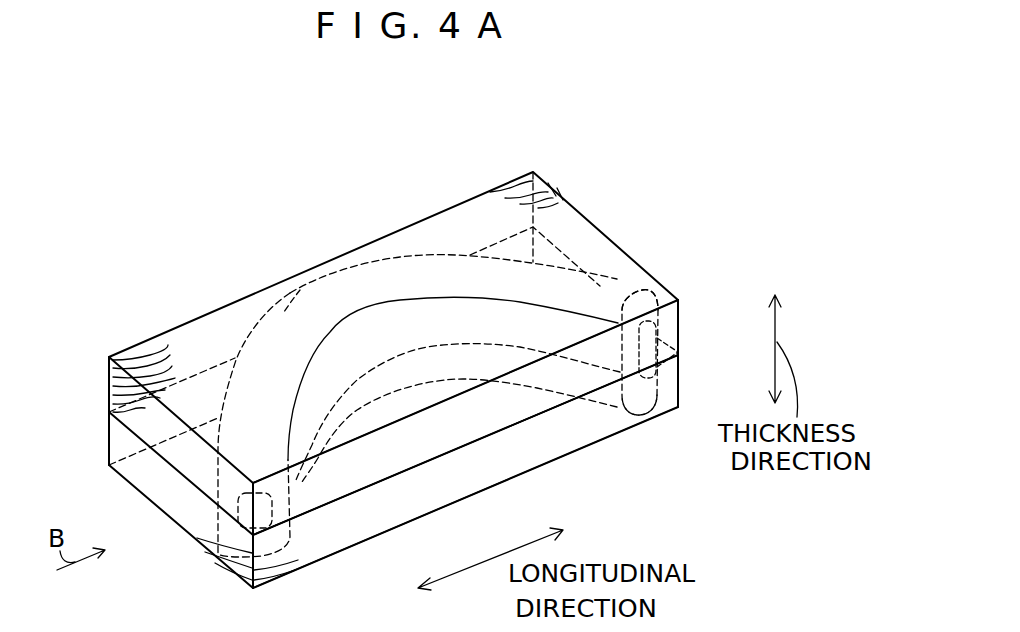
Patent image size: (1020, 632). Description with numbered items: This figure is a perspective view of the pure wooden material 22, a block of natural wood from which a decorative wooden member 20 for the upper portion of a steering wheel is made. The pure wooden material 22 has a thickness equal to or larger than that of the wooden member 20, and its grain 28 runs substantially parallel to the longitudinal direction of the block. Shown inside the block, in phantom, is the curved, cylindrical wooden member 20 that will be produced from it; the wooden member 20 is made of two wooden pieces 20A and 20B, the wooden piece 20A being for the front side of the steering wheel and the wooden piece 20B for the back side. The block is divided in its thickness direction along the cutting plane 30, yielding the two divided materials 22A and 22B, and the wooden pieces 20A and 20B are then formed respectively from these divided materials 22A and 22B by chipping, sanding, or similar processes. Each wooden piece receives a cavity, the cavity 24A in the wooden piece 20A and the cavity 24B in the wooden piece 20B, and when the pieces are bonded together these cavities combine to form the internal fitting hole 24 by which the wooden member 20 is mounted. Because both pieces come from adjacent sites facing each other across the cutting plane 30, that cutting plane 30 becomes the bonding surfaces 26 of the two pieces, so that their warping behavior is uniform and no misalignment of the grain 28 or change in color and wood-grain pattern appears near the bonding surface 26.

The wooden member 20 is at (272, 307).
The wooden piece 20A is at (617, 278).
The wooden piece 20B is at (613, 413).
The pure wooden material 22 is at (497, 186).
The divided material 22A is at (412, 225).
The divided material 22B is at (453, 503).
The fitting hole 24 is at (665, 339).
The cavity 24A is at (679, 303).
The cavity 24B is at (679, 380).
The bonding surface 26 is at (237, 495).
The grain 28 is at (142, 348).
The cutting plane 30 is at (127, 434).